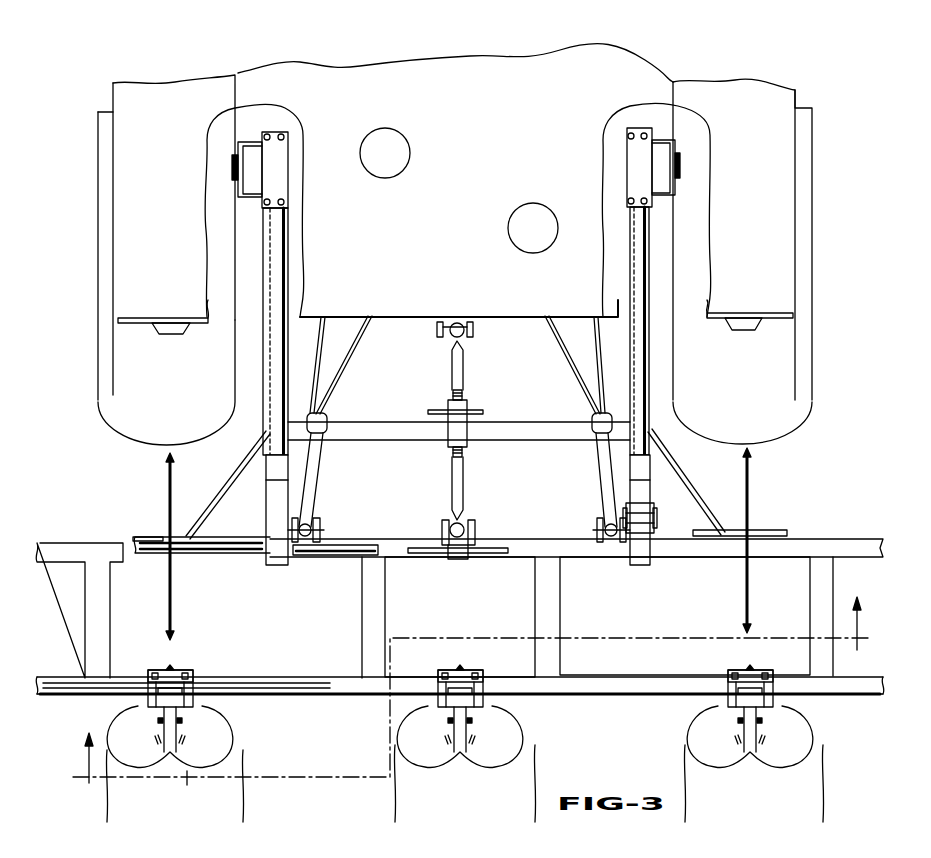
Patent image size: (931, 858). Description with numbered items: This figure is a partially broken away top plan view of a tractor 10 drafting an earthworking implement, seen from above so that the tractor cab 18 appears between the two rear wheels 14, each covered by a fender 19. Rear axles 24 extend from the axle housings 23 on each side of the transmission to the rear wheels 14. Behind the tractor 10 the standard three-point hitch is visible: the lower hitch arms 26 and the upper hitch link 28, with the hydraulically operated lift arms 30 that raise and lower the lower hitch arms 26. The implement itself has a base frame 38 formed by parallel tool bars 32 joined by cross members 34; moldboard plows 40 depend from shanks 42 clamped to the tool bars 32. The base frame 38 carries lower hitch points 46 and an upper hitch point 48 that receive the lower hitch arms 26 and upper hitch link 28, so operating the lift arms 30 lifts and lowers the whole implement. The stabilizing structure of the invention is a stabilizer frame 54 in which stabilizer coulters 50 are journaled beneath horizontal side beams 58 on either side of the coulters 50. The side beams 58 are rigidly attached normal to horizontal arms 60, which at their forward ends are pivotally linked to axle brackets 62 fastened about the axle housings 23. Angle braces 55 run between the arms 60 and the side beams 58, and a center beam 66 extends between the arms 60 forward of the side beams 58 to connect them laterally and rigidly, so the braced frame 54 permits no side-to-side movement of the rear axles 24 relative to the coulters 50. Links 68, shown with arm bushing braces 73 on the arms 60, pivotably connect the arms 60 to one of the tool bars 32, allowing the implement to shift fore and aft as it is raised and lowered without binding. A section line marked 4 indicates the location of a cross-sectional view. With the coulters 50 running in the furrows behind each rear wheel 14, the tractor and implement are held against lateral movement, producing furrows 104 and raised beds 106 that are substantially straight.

The section line 4- 4 is at (473, 707).
The tractor 10 is at (848, 278).
The rear wheels 14 is at (128, 422).
The cab 18 is at (396, 317).
The fenders 19 is at (196, 325).
The axle housings 23 is at (300, 178).
The rear axles 24 is at (232, 170).
The lower hitch arms 26 is at (318, 363).
The upper hitch link 28 is at (460, 377).
The hydraulic lift arms 30 is at (340, 377).
The parallel tool bars 32 is at (92, 548).
The cross members 34 is at (380, 608).
The base frame 38 is at (617, 710).
The moldboard plows 40 is at (227, 740).
The shanks 42 is at (186, 738).
The lower hitch points 46 is at (362, 515).
The upper hitch point 48 is at (477, 528).
The stabilizer coulters 50 is at (167, 497).
The stabilizer frame 54 is at (243, 558).
The angle braces 55 is at (232, 490).
The side beams 58 is at (163, 540).
The stabilizer arms 60 is at (270, 388).
The axle brackets 62 is at (277, 165).
The center beam 66 is at (513, 395).
The links 68 is at (656, 515).
The arm bushing braces 73 is at (268, 487).
The furrows 104 is at (187, 780).
The raised beds 106 is at (301, 752).